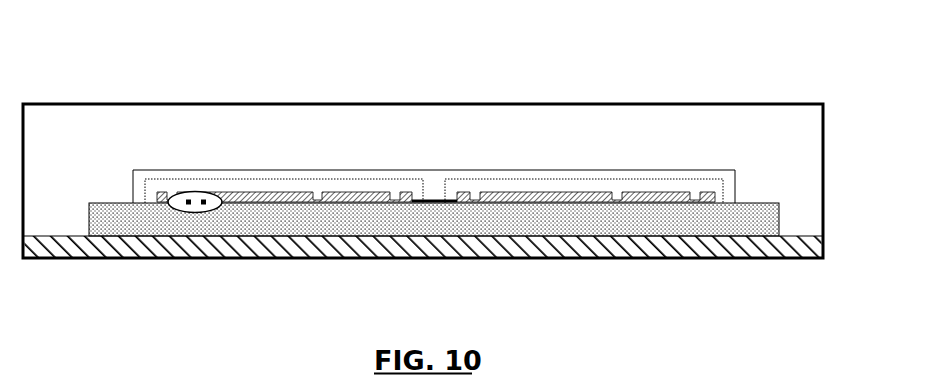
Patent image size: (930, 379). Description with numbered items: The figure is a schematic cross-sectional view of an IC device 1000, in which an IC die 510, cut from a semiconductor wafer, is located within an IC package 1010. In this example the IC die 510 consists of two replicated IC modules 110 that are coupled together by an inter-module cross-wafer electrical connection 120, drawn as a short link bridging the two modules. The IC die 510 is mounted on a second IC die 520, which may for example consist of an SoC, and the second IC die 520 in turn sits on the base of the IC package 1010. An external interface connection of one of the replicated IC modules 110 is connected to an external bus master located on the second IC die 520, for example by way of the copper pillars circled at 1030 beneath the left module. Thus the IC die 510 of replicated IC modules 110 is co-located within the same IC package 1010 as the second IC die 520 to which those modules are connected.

The IC device 1000 is at (165, 68).
The IC package 1010 is at (735, 103).
The copper pillars 1030 is at (195, 191).
The replicated IC module 110 is at (268, 178).
The inter-module cross-wafer electrical connection 120 is at (435, 198).
The IC die 510 is at (720, 170).
The second IC die 520 is at (755, 203).